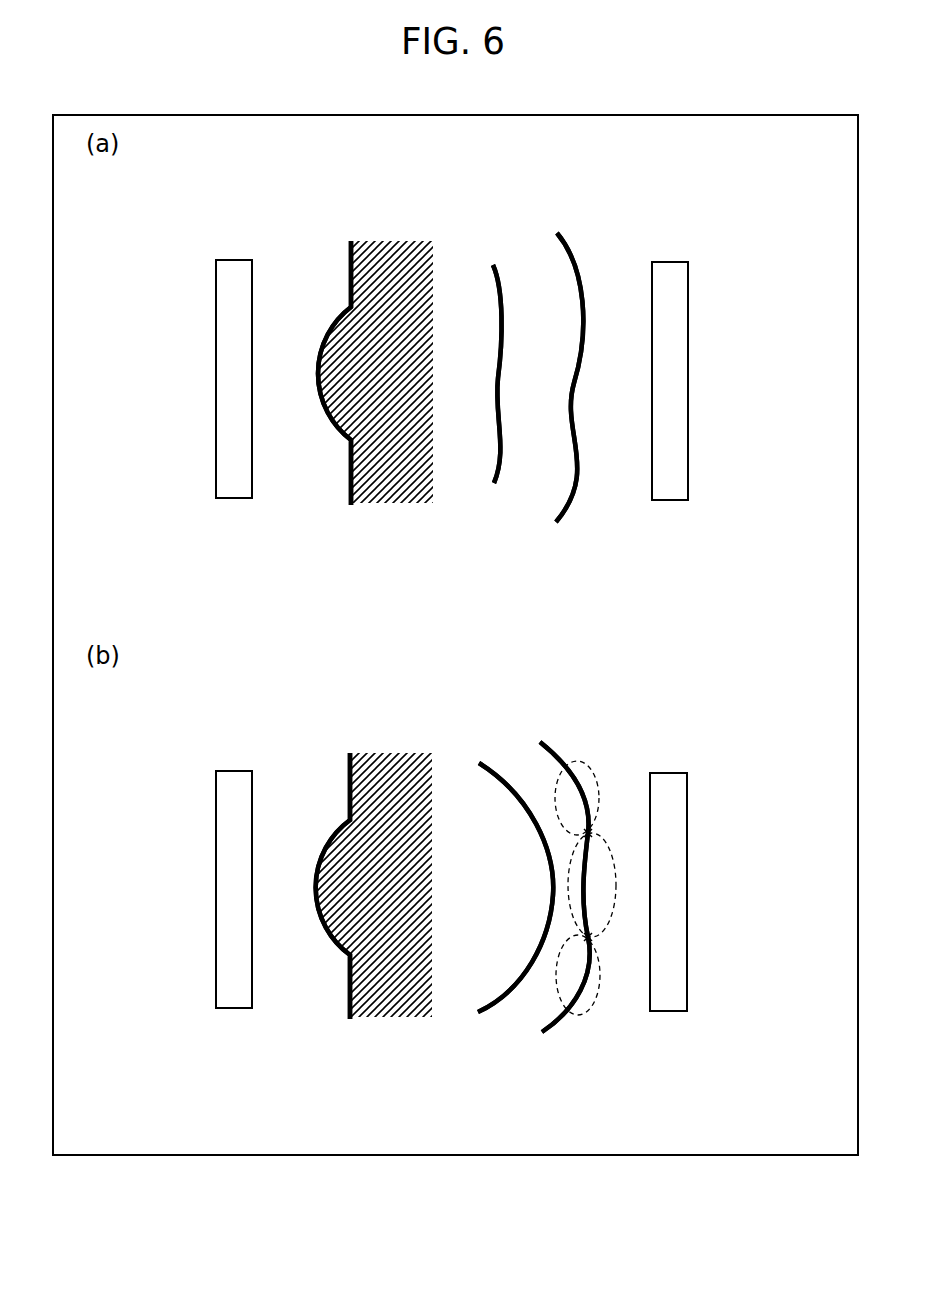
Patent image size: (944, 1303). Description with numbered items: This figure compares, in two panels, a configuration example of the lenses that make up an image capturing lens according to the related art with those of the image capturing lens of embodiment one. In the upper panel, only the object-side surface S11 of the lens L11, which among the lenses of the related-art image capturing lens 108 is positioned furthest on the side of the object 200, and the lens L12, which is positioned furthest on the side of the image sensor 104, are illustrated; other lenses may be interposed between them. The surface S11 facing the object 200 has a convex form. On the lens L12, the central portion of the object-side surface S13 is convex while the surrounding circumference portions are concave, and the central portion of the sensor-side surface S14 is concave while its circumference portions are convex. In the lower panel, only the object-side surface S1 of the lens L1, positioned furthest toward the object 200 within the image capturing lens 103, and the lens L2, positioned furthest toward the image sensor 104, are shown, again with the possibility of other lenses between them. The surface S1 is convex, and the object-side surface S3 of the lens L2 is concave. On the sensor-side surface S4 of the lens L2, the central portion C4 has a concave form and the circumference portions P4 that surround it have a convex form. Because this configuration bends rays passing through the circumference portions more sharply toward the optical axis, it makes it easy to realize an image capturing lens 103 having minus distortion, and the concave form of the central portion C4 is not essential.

The image capturing lens 108 is at (335, 214).
The image capturing lens 103 is at (335, 726).
The object 200 is at (215, 405).
The image sensor 104 is at (688, 406).
The lens L11 is at (386, 505).
The lens L12 is at (539, 500).
The surface S11 is at (351, 260).
The surface S13 is at (493, 263).
The surface S14 is at (567, 237).
The lens L1 is at (385, 1019).
The lens L2 is at (523, 1010).
The surface S1 is at (350, 770).
The surface S3 is at (481, 770).
The surface S4 is at (543, 745).
The circumference portions P4 is at (595, 776).
The central portion C4 is at (616, 870).